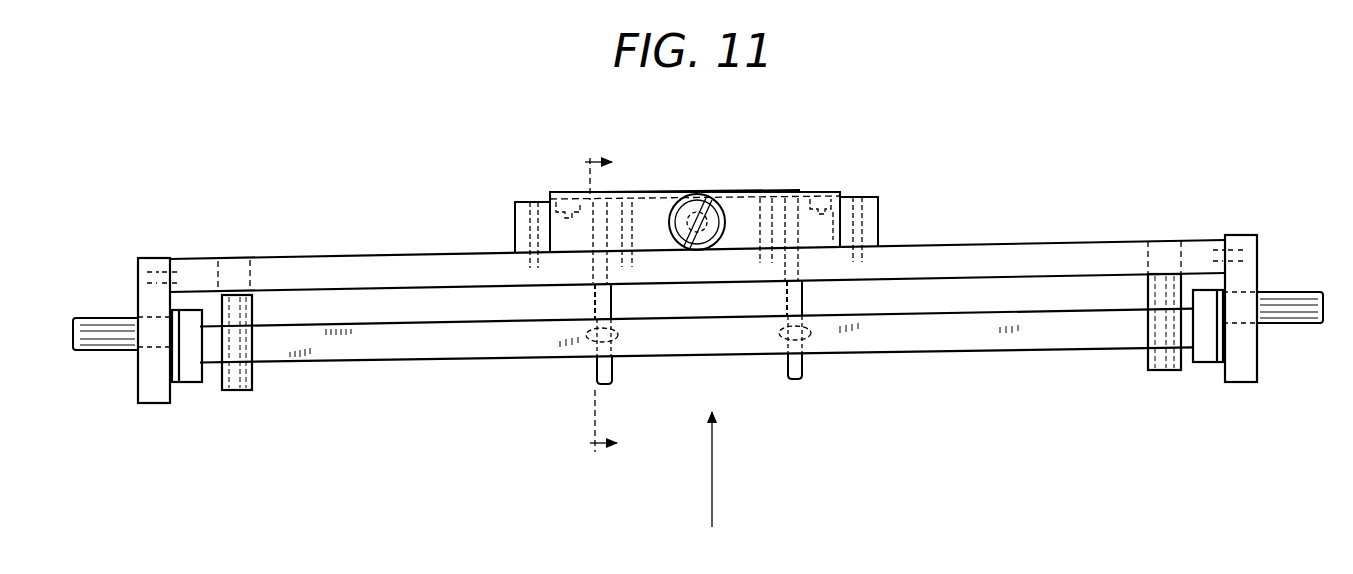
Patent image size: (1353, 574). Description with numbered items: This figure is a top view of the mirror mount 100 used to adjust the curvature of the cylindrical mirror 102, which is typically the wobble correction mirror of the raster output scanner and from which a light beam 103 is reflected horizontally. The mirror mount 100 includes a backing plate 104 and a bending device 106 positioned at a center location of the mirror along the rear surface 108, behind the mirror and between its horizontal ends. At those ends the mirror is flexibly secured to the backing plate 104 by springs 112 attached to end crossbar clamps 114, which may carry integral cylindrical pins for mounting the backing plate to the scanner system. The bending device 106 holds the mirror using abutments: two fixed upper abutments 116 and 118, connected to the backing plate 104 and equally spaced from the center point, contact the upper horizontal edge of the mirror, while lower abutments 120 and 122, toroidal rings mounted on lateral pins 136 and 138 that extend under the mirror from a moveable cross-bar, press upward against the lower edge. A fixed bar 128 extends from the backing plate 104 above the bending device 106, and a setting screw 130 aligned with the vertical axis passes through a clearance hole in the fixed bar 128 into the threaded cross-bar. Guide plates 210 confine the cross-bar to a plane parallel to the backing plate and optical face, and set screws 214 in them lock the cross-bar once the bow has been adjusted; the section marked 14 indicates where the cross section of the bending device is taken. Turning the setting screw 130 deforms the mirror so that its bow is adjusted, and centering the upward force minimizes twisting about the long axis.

The mirror mount 100 is at (942, 472).
The cylindrical mirror 102 is at (937, 346).
The light beam 103 is at (713, 450).
The backing plate 104 is at (937, 250).
The bending device 106 is at (563, 175).
The rear surface 108 is at (310, 322).
The springs 112 is at (188, 311).
The end crossbar clamps 114 is at (157, 398).
The upper abutment 116 is at (233, 387).
The upper abutment 118 is at (1160, 372).
The lower abutment 120 is at (620, 339).
The lower abutment 122 is at (780, 336).
The fixed bar 128 is at (805, 188).
The setting screw 130 is at (714, 202).
The lateral pin 136 is at (598, 370).
The lateral pin 138 is at (797, 380).
The guide plates 210 is at (522, 200).
The set screws 214 is at (510, 238).
The section line 14- 14 is at (621, 304).